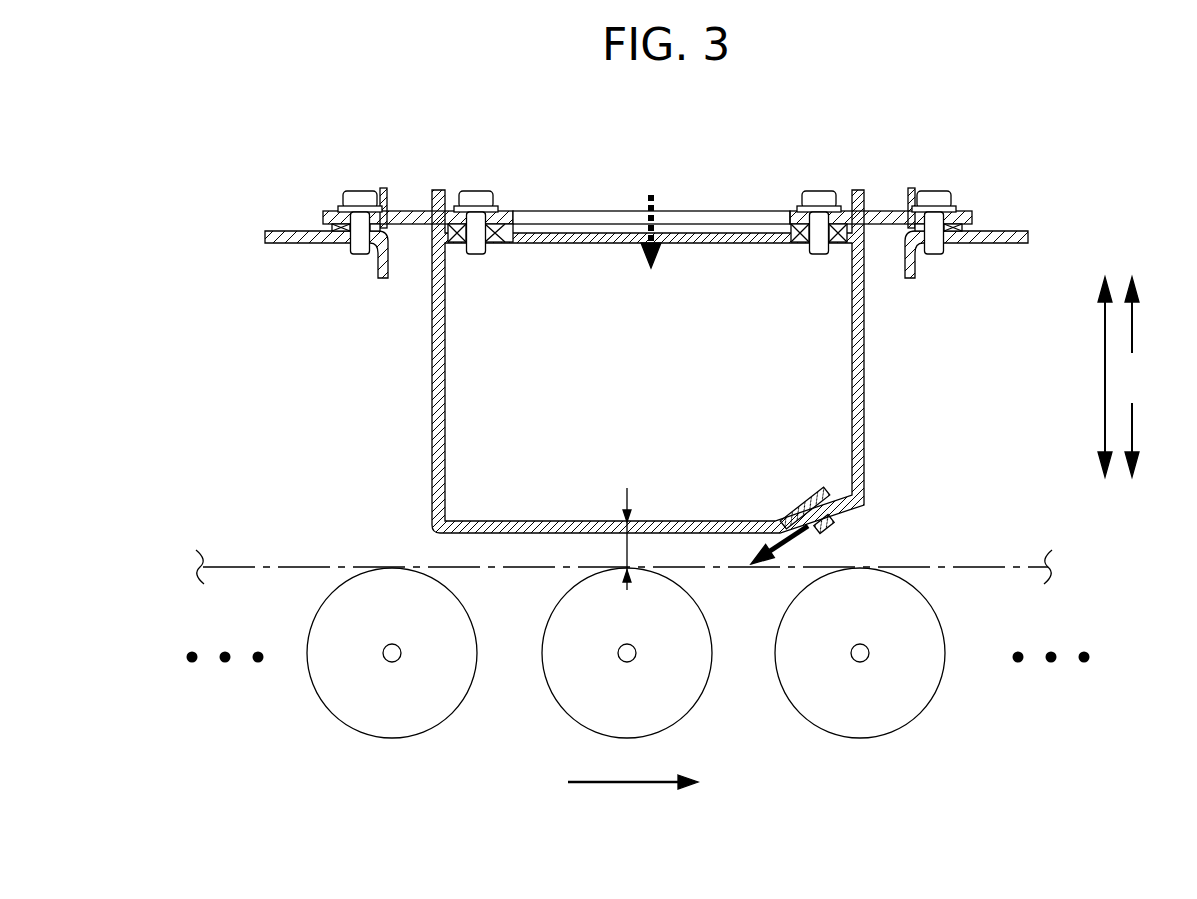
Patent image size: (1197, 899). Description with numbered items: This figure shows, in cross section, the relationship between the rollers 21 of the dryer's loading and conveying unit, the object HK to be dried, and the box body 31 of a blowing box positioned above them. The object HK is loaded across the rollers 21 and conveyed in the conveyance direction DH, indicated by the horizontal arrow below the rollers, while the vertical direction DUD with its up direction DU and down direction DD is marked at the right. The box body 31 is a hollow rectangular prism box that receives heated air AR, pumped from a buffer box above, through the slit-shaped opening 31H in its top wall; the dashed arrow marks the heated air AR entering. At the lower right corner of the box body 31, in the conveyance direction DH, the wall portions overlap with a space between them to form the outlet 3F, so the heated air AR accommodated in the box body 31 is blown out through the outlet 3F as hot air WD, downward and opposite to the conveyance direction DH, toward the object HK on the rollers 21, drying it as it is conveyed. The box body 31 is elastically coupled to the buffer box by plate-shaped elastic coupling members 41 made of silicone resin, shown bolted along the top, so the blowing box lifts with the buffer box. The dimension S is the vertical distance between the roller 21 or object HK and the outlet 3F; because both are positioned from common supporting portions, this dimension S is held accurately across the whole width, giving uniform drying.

The box body 31 is at (866, 388).
The opening 31H is at (513, 245).
The outlet 3F is at (838, 503).
The elastic coupling member 41 is at (413, 212).
The roller 21 is at (376, 738).
The heated air AR is at (651, 192).
The object to be dried HK is at (231, 565).
The dimension S is at (636, 539).
The hot air WD is at (800, 547).
The conveyance direction DH is at (633, 797).
The vertical direction DUD is at (1077, 377).
The up direction DU is at (1149, 315).
The down direction DD is at (1149, 440).